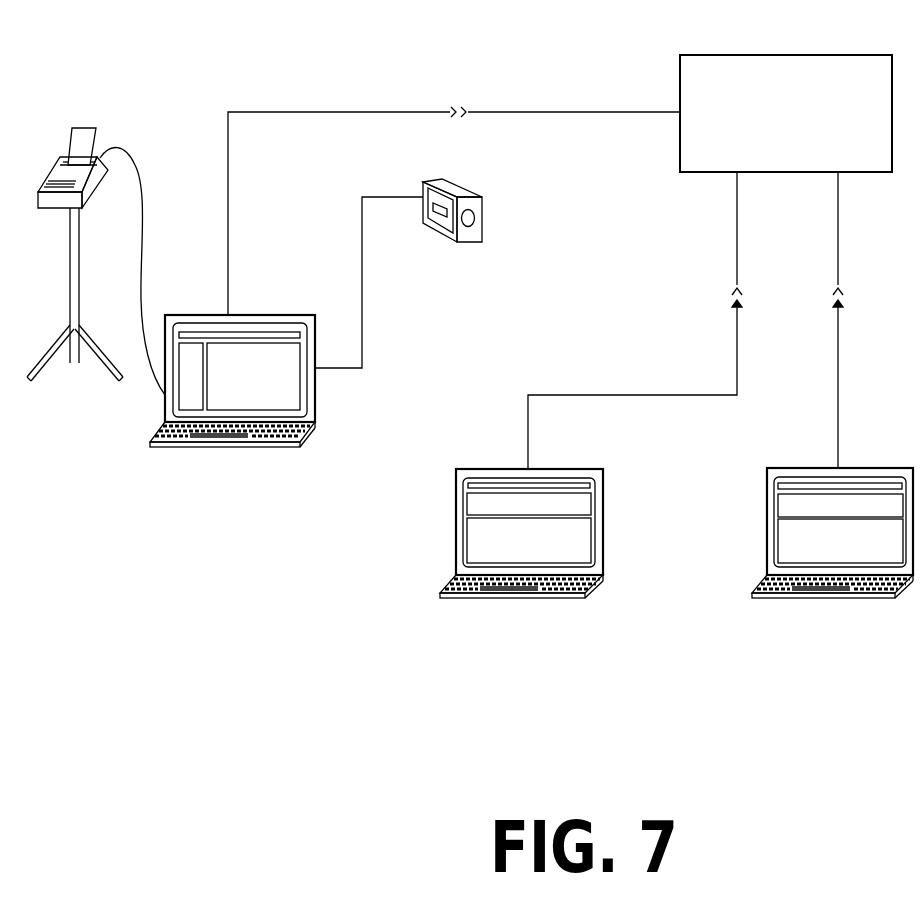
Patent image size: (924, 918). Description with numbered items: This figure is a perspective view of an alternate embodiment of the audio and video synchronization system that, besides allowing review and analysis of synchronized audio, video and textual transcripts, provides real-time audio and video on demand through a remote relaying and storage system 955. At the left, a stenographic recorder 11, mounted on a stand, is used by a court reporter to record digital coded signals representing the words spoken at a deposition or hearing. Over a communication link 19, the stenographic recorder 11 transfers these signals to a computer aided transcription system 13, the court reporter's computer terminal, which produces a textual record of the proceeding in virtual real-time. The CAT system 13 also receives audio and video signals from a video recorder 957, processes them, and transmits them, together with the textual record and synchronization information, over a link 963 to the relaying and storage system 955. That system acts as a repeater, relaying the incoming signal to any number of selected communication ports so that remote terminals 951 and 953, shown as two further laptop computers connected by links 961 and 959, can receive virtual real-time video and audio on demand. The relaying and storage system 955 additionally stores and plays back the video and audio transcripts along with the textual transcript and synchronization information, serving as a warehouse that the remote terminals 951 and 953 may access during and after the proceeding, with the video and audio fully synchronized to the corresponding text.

The stenographic recorder 11 is at (78, 105).
The communication link 19 is at (143, 185).
The computer aided transcription (CAT) system 13 is at (202, 463).
The communication link to relaying and storage system 963 is at (362, 112).
The video recorder 957 is at (485, 223).
The remote relaying and storage system 955 is at (783, 55).
The communication link from remote computer 951 961 is at (585, 395).
The communication link from remote computer 953 959 is at (840, 375).
The remote terminal 951 is at (442, 527).
The remote terminal 953 is at (757, 527).